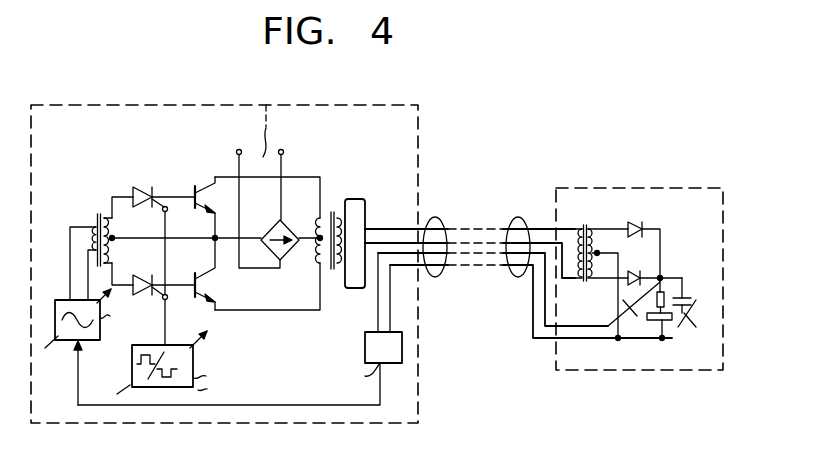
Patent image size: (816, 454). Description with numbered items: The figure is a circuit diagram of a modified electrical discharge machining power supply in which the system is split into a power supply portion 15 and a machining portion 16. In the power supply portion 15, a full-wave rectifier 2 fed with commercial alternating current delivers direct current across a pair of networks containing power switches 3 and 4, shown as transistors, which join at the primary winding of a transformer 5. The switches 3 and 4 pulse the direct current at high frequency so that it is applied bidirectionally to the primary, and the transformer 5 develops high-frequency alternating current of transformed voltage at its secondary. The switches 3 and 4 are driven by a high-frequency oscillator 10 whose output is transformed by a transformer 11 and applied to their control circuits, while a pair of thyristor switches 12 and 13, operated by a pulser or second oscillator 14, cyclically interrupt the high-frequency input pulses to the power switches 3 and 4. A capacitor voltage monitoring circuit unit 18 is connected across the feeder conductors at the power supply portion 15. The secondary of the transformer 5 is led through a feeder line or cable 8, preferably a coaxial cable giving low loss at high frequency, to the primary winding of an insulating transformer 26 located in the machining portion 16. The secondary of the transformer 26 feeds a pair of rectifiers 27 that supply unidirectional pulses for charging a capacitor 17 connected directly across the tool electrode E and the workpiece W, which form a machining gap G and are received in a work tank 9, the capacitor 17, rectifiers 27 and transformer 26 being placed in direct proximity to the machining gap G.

The full-wave rectifier 2 is at (274, 232).
The power switch 3 is at (207, 190).
The power switch 4 is at (212, 294).
The transformer 5 is at (333, 215).
The high-frequency feeder 8 is at (490, 268).
The work tank 9 is at (634, 322).
The high-frequency oscillator 10 is at (64, 298).
The transformer 11 is at (98, 215).
The switch 12 is at (142, 187).
The switch 13 is at (136, 276).
The pulser or second oscillator 14 is at (187, 365).
The unit 15 is at (418, 366).
The machining zone 16 is at (652, 188).
The capacitor 17 is at (688, 298).
The capacitor voltage monitoring circuit unit 18 is at (365, 341).
The insulating transformer 26 is at (587, 229).
The rectifiers 27 is at (643, 223).
The machining electrode E is at (668, 286).
The machining gap G is at (697, 323).
The workpiece W is at (672, 322).